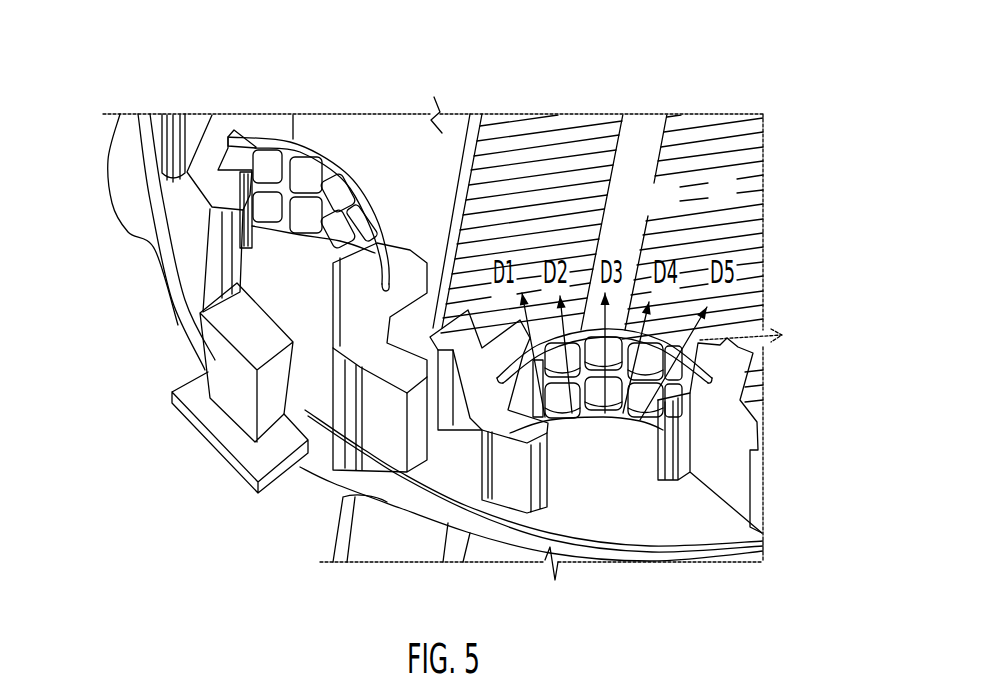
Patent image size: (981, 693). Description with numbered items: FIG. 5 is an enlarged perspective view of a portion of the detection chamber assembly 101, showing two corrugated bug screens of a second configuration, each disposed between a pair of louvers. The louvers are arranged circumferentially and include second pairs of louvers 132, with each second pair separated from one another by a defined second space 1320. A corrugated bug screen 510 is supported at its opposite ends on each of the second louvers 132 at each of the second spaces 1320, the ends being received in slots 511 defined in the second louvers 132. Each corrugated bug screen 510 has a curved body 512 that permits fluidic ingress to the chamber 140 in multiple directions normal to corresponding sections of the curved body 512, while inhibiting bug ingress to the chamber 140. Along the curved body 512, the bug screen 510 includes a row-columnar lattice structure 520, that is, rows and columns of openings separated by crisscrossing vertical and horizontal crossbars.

The detection chamber assembly 101 is at (350, 110).
The second pair of louvers 132 is at (213, 203).
The chamber 140 is at (678, 213).
The corrugated bug screen 510 is at (312, 232).
The slots 511 is at (391, 257).
The curved body 512 is at (276, 142).
The row-columnar lattice structure 520 is at (588, 430).
The second space 1320 is at (386, 184).